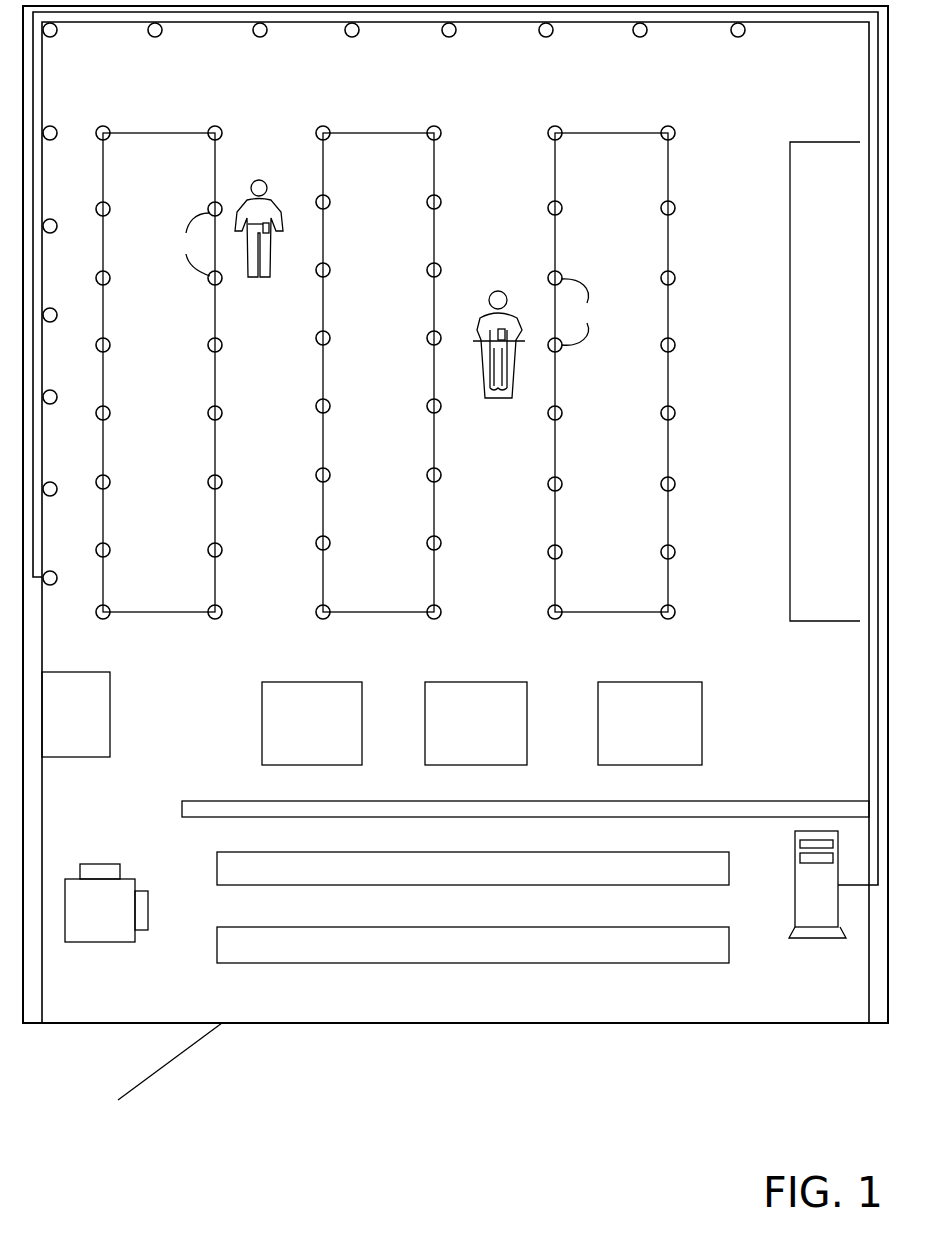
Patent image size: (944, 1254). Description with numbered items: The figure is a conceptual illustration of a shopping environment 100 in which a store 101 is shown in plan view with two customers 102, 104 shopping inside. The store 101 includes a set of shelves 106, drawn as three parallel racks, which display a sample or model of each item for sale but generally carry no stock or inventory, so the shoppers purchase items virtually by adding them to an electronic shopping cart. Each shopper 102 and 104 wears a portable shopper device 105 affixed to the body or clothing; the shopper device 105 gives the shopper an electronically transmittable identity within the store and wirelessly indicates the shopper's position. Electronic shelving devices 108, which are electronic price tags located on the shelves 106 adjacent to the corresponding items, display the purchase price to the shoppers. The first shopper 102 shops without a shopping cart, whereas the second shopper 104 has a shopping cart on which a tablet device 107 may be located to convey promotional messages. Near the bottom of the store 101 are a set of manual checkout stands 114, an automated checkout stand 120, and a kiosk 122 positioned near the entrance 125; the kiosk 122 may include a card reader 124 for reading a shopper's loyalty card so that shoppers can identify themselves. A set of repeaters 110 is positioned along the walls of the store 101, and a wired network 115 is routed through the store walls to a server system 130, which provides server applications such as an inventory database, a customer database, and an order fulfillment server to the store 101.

The shopping environment 100 is at (805, 1104).
The store 101 is at (383, 1023).
The customer 102 is at (272, 202).
The customer 104 is at (486, 314).
The shopper device 105 is at (270, 232).
The shelves 106 is at (176, 204).
The tablet device 107 is at (94, 864).
The electronic shelving device 108 is at (385, 279).
The repeaters 110 is at (541, 37).
The manual checkout stands 114 is at (328, 734).
The wired network 115 is at (600, 13).
The automated checkout stand 120 is at (90, 717).
The kiosk 122 is at (115, 935).
The card reader 124 is at (152, 920).
The entrance 125 is at (133, 1024).
The server system 130 is at (817, 884).